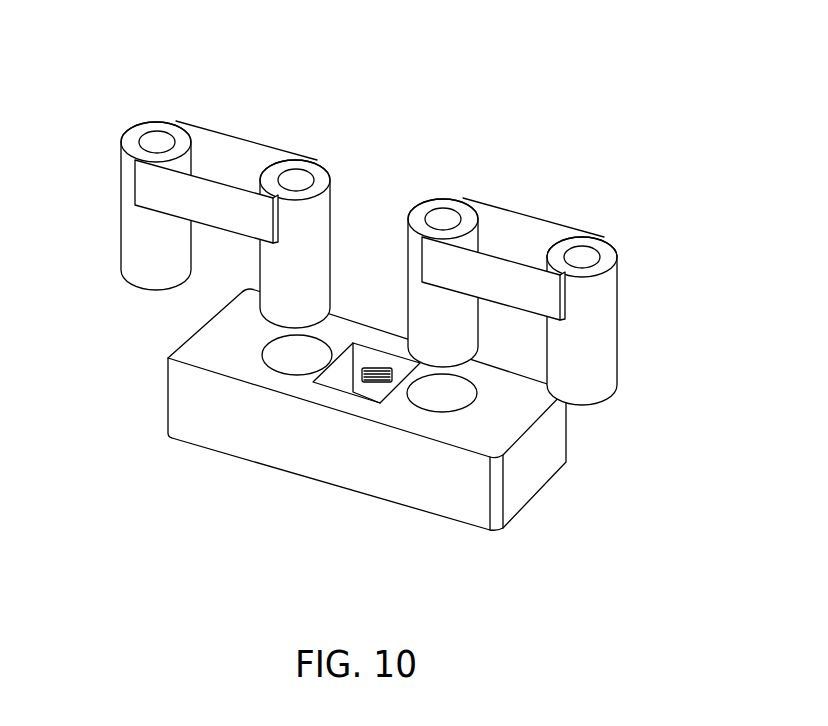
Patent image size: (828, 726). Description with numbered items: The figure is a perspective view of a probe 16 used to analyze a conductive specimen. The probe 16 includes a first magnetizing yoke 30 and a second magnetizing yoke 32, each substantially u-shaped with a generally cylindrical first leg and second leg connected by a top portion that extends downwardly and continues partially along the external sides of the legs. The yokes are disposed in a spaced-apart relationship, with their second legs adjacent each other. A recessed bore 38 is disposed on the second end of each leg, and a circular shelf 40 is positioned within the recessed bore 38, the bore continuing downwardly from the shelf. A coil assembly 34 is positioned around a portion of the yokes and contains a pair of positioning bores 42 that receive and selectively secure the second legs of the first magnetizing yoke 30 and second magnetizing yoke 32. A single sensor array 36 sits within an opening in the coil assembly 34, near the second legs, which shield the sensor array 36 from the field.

The probe 16 is at (366, 308).
The first magnetizing yoke 30 is at (186, 203).
The second magnetizing yoke 32 is at (549, 301).
The coil assembly 34 is at (363, 397).
The sensor array 36 is at (378, 368).
The recessed bore 38 is at (587, 265).
The shelf 40 is at (158, 147).
The positioning bores 42 is at (332, 378).